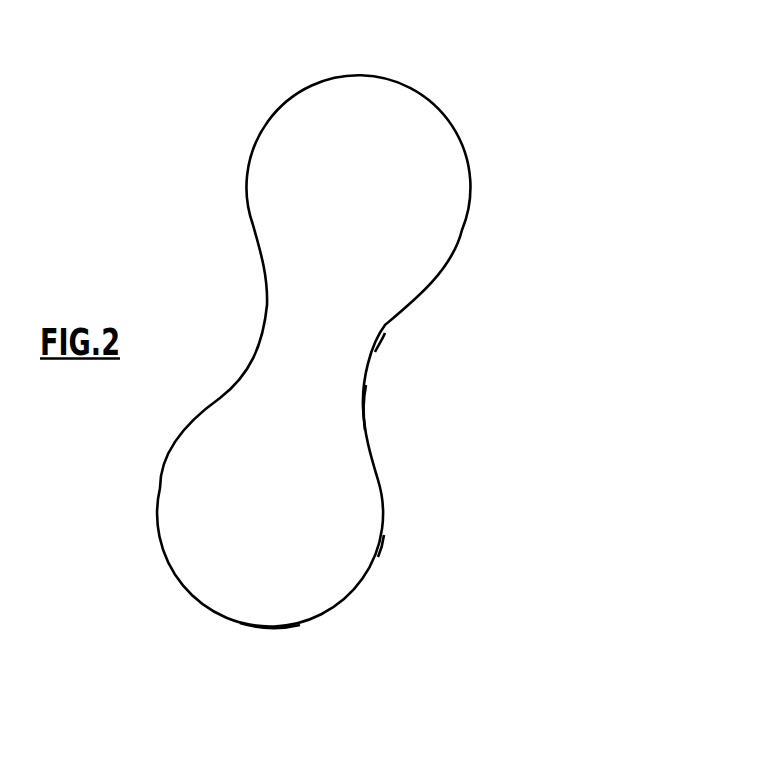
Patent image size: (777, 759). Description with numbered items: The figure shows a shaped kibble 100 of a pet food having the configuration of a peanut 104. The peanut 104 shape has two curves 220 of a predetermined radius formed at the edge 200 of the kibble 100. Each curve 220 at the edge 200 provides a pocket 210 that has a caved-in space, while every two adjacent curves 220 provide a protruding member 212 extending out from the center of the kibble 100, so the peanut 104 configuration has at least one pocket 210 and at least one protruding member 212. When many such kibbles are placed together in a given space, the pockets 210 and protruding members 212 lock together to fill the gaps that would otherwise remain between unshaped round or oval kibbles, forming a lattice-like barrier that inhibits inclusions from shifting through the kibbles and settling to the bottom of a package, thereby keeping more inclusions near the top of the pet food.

The shaped kibble 100 is at (520, 402).
The peanut 104 is at (275, 643).
The edge 200 is at (470, 195).
The pocket 210 is at (468, 412).
The protruding member 212 is at (378, 557).
The curve 220 is at (375, 353).